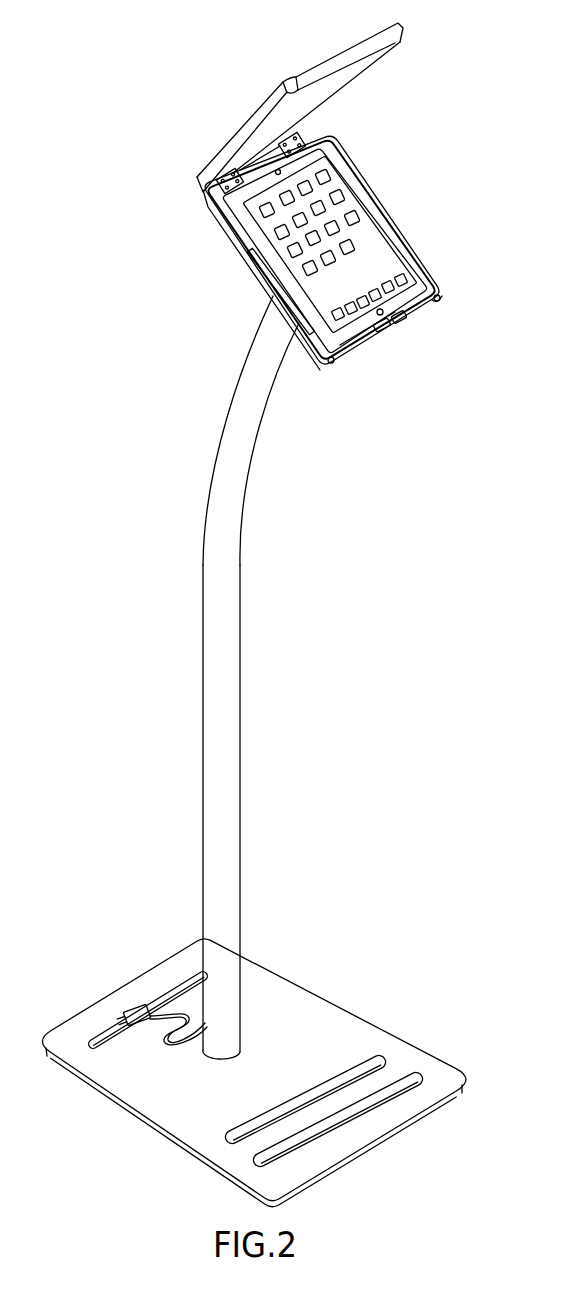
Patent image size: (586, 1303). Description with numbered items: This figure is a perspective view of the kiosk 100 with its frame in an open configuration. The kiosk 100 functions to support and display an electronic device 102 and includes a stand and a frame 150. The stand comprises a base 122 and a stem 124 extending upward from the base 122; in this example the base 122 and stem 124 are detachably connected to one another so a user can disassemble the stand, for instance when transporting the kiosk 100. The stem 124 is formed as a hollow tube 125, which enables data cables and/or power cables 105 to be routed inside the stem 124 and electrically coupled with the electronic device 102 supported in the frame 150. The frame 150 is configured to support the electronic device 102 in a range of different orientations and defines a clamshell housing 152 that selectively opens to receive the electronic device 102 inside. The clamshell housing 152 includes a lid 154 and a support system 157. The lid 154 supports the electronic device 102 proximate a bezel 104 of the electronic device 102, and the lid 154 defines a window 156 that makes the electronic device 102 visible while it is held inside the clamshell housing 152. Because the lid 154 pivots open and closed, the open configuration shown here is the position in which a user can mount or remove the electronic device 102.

The kiosk 100 is at (90, 191).
The electronic device 102 is at (373, 249).
The bezel 104 is at (348, 172).
The power cables 105 is at (402, 335).
The base 122 is at (327, 1017).
The stem 124 is at (232, 873).
The hollow tube 125 is at (237, 722).
The frame 150 is at (177, 231).
The clamshell housing 152 is at (228, 272).
The lid 154 is at (391, 23).
The window 156 is at (323, 78).
The support system 157 is at (450, 290).